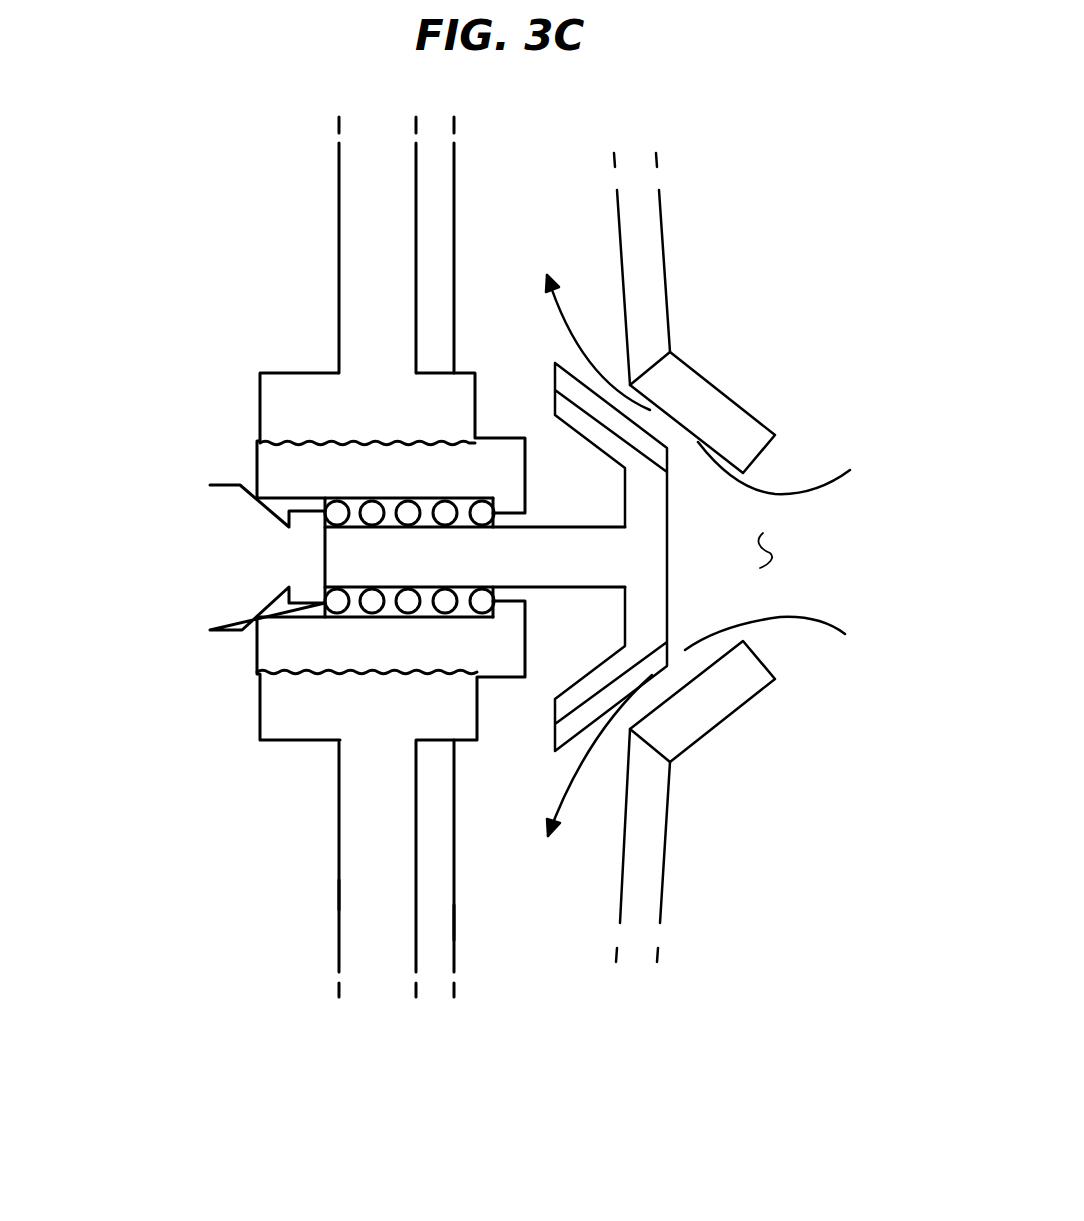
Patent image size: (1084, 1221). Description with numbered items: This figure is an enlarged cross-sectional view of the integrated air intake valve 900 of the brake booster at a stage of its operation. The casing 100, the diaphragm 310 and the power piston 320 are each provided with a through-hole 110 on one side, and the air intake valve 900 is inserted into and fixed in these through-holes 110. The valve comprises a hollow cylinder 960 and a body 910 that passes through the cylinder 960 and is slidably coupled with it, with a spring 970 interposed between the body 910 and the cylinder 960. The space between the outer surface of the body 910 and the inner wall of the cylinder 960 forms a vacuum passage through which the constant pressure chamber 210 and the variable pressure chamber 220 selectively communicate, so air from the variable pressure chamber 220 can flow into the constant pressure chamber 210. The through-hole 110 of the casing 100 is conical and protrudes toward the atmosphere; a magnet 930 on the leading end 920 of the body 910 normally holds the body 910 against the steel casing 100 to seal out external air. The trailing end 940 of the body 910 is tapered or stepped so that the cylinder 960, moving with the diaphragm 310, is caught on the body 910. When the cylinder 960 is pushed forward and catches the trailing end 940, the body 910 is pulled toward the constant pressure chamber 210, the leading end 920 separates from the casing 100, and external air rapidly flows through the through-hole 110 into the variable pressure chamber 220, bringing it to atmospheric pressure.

The casing 100 is at (686, 197).
The through-hole 110 is at (767, 548).
The constant pressure chamber 210 is at (298, 182).
The variable pressure chamber 220 is at (545, 197).
The diaphragm 310 is at (453, 925).
The power piston 320 is at (353, 895).
The air intake valve 900 is at (185, 445).
The body 910 is at (340, 558).
The leading end 920 is at (662, 685).
The magnet 930 is at (630, 425).
The trailing end 940 is at (210, 553).
The cylinder 960 is at (293, 470).
The spring 970 is at (327, 617).